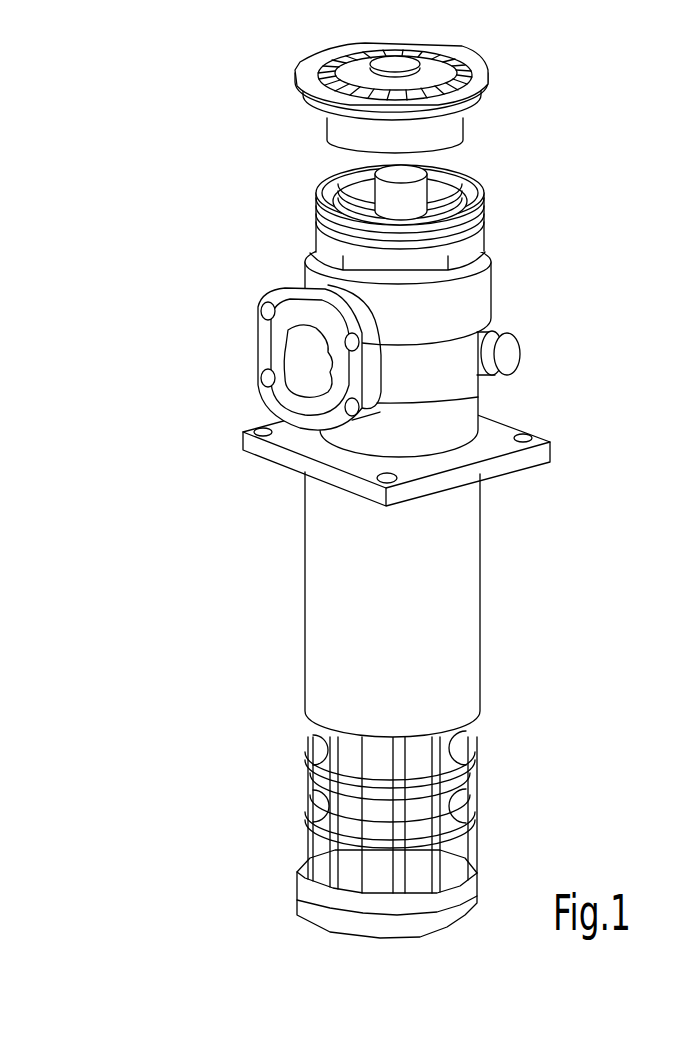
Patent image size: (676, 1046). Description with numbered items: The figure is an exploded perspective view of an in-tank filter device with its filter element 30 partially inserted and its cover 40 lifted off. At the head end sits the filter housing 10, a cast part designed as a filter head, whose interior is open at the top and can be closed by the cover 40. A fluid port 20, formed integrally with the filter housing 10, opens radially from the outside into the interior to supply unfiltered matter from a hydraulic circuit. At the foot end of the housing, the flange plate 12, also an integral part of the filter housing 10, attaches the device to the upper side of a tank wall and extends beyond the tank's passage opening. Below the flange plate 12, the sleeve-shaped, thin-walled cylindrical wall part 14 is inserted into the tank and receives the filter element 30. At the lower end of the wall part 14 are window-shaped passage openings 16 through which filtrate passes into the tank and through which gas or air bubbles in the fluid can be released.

The filter housing 10 is at (478, 298).
The flange plate 12 is at (503, 433).
The wall part 14 is at (480, 608).
The passage openings 16 is at (447, 817).
The fluid port 20 is at (300, 357).
The filter element 30 is at (483, 242).
The cover 40 is at (486, 74).